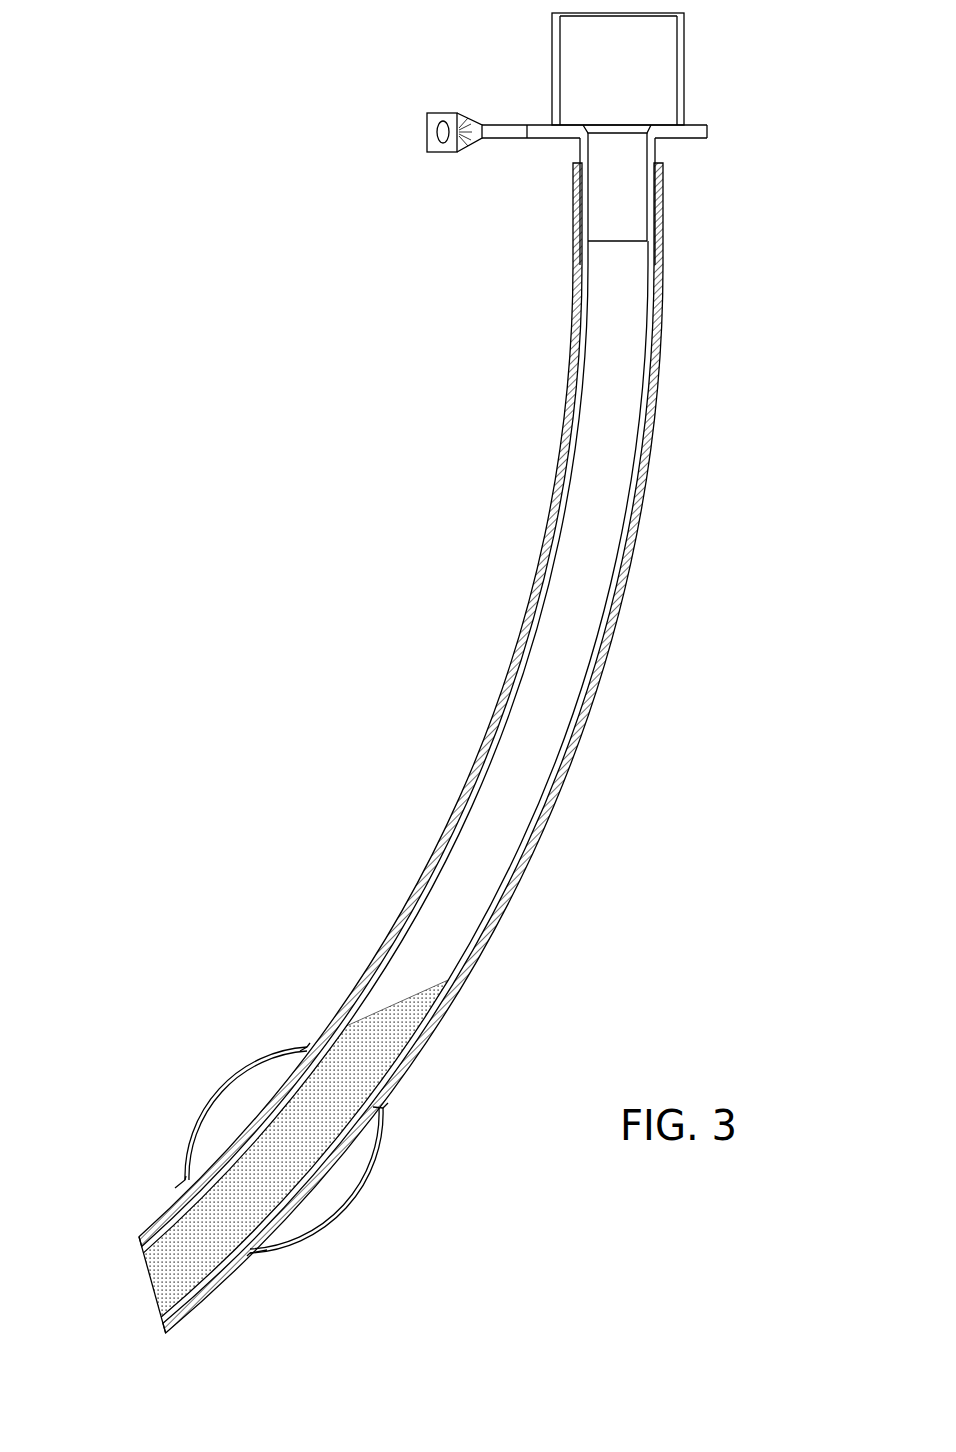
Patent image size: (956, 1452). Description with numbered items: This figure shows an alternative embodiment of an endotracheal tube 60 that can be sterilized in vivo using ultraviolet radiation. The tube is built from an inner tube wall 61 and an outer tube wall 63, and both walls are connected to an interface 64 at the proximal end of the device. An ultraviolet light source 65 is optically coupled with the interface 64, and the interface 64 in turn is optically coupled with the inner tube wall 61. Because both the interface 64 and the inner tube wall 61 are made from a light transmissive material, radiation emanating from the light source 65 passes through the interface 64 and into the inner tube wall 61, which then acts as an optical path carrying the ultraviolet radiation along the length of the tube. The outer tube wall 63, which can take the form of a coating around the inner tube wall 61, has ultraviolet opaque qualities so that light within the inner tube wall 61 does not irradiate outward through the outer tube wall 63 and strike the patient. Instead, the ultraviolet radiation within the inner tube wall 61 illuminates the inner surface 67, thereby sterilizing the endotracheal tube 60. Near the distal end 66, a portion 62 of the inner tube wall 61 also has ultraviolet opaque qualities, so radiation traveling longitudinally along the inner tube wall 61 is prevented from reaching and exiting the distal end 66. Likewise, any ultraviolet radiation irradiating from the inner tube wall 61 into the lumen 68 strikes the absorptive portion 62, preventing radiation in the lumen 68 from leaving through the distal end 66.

The endotracheal tube 60 is at (116, 338).
The inner tube wall 61 is at (652, 282).
The portion of the inner tube wall 62 is at (412, 1028).
The outer tube wall 63 is at (662, 350).
The interface 64 is at (686, 64).
The ultraviolet light source 65 is at (438, 112).
The distal end 66 is at (147, 1278).
The inner surface 67 is at (643, 400).
The lumen 68 is at (528, 822).